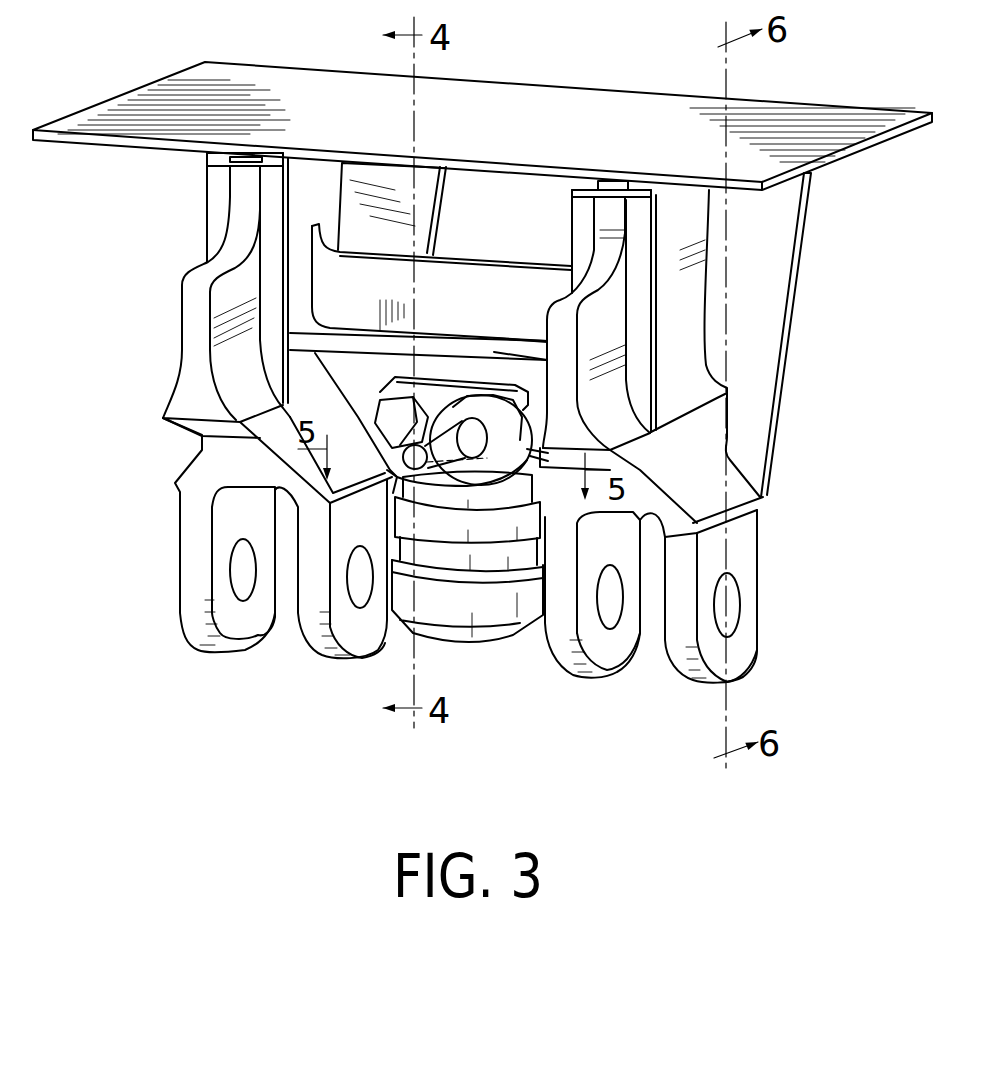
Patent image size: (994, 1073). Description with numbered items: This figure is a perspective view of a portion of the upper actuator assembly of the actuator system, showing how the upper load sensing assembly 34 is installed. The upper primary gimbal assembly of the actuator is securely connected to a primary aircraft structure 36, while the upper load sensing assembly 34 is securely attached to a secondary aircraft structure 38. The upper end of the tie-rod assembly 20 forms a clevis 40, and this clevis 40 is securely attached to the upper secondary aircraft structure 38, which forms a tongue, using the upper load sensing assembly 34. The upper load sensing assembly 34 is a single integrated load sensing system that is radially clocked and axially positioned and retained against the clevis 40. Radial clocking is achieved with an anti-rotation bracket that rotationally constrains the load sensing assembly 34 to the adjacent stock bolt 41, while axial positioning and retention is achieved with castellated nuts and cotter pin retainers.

The tie-rod assembly 20 is at (493, 650).
The upper load sensing assembly 34 is at (517, 408).
The primary aircraft structure 36 is at (180, 303).
The secondary aircraft structure 38 is at (507, 253).
The clevis 40 is at (383, 392).
The stock bolt 41 is at (377, 410).